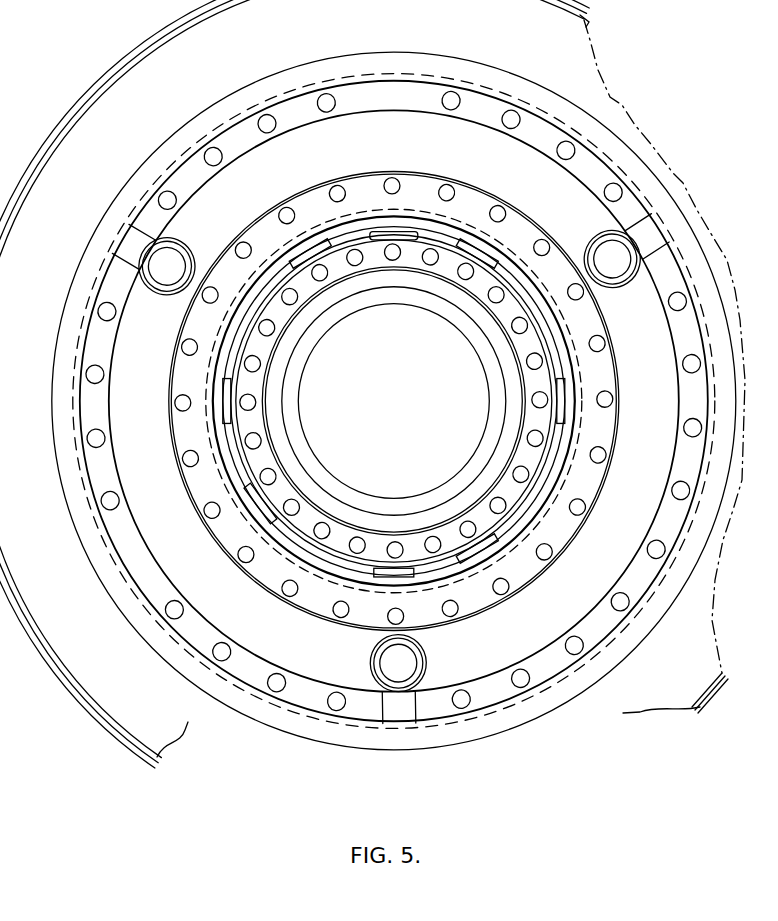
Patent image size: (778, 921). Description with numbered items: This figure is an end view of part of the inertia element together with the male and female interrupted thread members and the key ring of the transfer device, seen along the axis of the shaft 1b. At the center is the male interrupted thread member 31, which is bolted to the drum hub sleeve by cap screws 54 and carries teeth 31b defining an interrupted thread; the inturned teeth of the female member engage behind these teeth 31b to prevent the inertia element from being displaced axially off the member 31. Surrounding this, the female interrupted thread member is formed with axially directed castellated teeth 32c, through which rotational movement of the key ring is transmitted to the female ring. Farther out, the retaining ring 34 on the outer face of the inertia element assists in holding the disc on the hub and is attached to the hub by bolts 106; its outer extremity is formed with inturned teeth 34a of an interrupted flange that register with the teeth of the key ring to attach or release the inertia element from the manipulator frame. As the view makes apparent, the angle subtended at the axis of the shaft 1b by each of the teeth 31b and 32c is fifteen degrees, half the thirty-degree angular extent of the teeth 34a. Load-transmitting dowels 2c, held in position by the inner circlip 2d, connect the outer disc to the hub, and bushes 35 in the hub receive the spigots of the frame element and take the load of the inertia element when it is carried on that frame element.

The shaft 1b is at (462, 414).
The load-transmitting dowels 2c is at (617, 192).
The inner circlip 2d is at (602, 167).
The male interrupted thread member 31 is at (333, 267).
The teeth of the male interrupted thread member 31b is at (292, 358).
The axially directed castellated teeth 32c is at (310, 255).
The retaining ring 34 is at (468, 205).
The inturned teeth of an interrupted flange 34a is at (389, 232).
The bushes 35 is at (172, 262).
The cap screws 54 is at (518, 328).
The bolts 106 is at (280, 208).